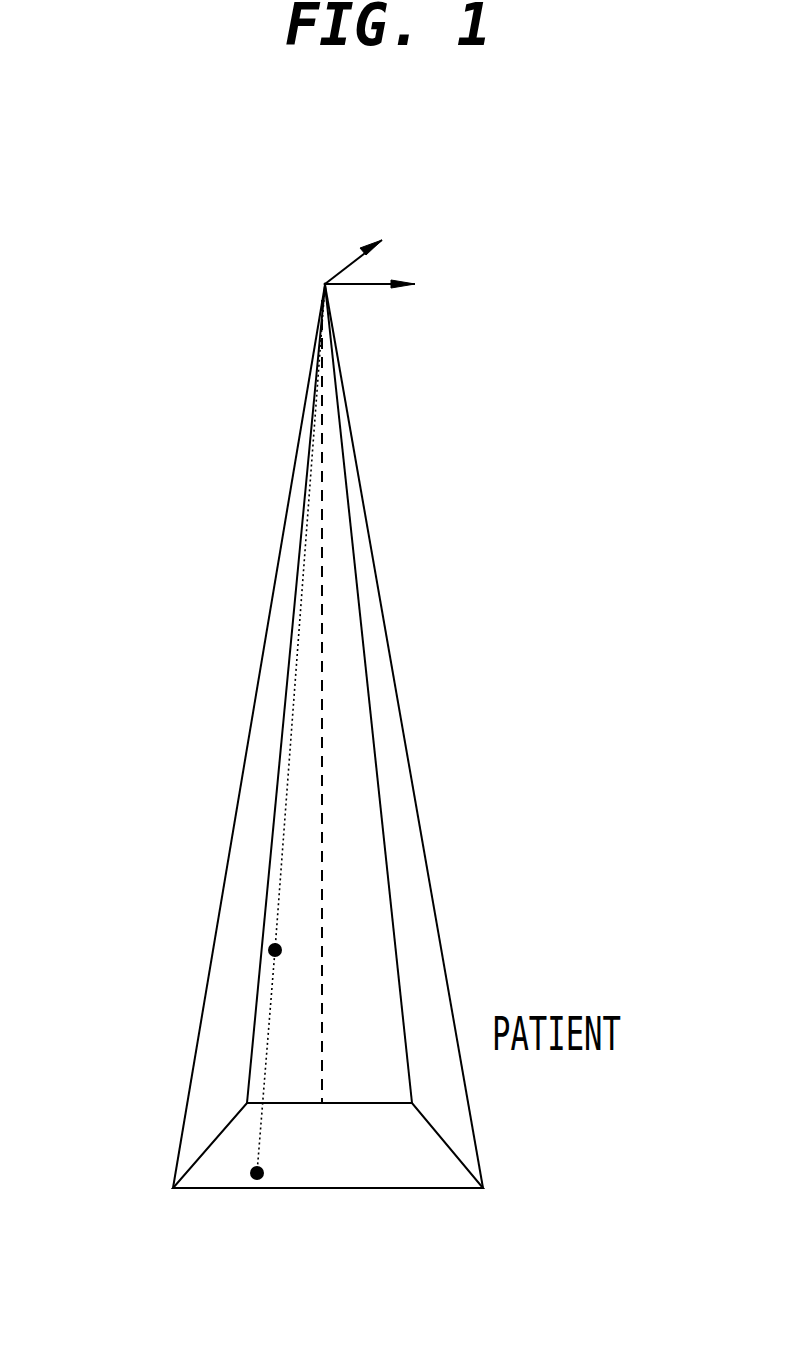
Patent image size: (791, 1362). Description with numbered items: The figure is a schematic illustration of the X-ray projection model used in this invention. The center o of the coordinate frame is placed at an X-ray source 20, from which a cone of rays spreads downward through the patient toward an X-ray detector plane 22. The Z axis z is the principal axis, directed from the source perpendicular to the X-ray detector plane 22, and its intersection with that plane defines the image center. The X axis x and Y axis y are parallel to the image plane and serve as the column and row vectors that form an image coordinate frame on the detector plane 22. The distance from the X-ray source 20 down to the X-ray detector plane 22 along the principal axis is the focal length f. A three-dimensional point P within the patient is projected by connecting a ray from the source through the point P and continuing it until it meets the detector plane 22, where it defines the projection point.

The X-ray source 20 is at (170, 203).
The X-ray detector plane 22 is at (217, 1192).
The focal length f is at (341, 701).
The 3-D point P is at (307, 930).
The Z axis z is at (328, 736).
The X axis x is at (390, 302).
The Y axis y is at (375, 252).
The center of the coordinate frame o is at (310, 267).